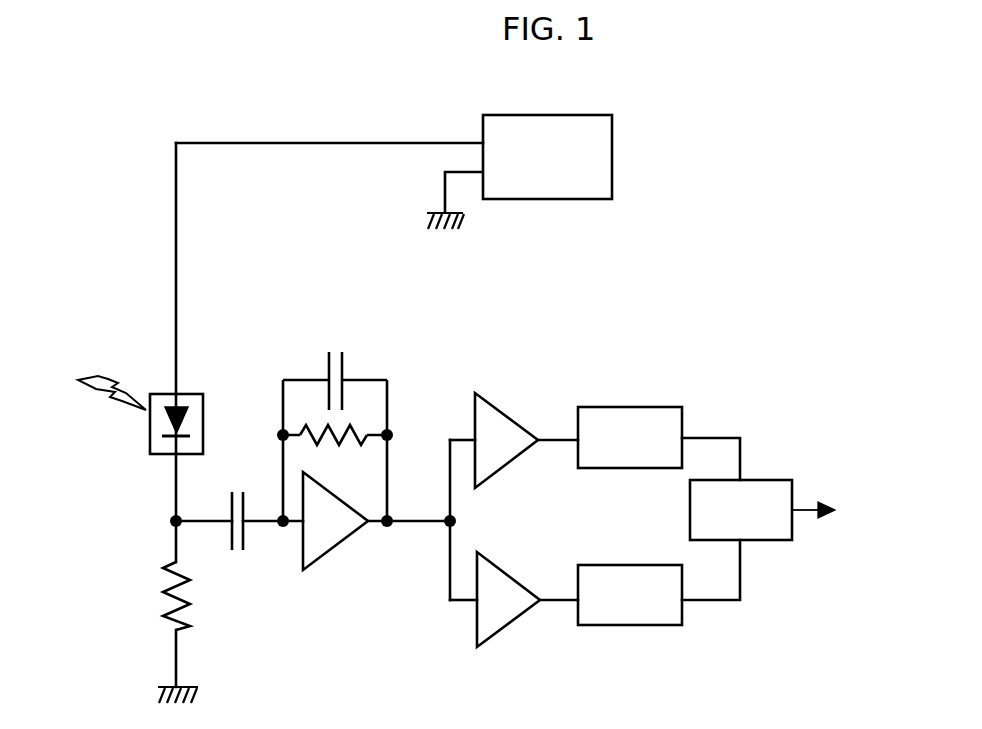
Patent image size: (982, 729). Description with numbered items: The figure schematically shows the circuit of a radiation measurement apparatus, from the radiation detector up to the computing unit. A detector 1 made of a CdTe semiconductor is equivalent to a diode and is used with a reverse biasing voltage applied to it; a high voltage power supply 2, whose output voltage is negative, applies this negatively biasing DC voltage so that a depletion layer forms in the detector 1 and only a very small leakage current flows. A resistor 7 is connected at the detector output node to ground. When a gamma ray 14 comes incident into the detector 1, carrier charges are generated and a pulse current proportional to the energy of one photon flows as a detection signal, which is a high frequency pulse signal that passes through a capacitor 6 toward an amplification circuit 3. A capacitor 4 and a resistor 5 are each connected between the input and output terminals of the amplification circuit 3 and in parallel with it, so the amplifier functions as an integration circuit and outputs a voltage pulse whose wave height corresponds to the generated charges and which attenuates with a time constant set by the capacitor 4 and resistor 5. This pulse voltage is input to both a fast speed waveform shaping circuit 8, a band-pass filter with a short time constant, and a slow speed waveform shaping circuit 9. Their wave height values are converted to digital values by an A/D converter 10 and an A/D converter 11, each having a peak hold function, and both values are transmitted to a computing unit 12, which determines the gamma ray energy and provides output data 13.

The detector 1 is at (150, 437).
The high voltage power supply 2 is at (613, 160).
The amplification circuit 3 is at (336, 545).
The capacitor 4 is at (332, 350).
The resistor 5 is at (352, 434).
The capacitor 6 is at (233, 490).
The resistor 7 is at (163, 607).
The fast speed waveform shaping circuit 8 is at (507, 412).
The slow speed waveform shaping circuit 9 is at (508, 624).
The A/D converter 10 is at (628, 405).
The A/D converter 11 is at (636, 627).
The computing unit 12 is at (770, 478).
The output data 13 is at (803, 515).
The gamma ray 14 is at (97, 372).